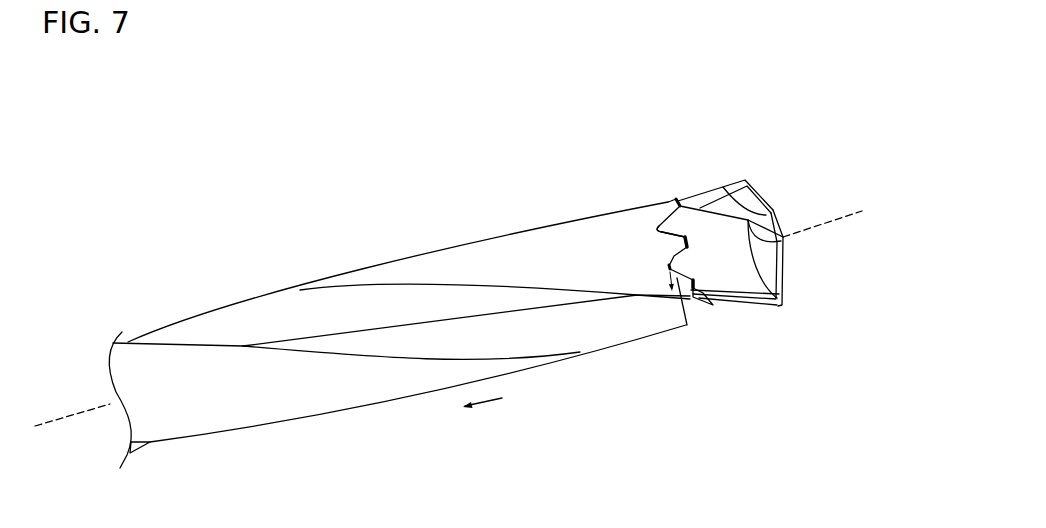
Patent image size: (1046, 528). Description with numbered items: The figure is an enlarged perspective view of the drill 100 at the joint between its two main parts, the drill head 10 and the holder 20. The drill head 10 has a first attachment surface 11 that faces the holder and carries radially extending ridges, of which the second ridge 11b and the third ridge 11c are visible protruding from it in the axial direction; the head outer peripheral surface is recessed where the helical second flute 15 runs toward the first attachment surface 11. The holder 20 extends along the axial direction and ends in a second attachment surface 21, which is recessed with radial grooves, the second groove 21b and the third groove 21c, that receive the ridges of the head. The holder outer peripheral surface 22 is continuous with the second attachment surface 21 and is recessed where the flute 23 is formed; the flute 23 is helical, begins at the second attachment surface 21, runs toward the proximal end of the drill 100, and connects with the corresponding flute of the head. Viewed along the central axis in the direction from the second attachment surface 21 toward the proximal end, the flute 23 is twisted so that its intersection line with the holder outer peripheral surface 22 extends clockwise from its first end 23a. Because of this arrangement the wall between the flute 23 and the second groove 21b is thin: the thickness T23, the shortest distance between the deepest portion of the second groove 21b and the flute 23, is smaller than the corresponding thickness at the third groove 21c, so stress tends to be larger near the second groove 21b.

The drill 100 is at (841, 100).
The drill head 10 is at (783, 200).
The first attachment surface 11 is at (700, 232).
The second ridge 11b is at (693, 266).
The third ridge 11c is at (675, 223).
The second flute 15 is at (755, 192).
The holder 20 is at (485, 232).
The second attachment surface 21 is at (673, 247).
The second groove 21b is at (670, 265).
The third groove 21c is at (663, 220).
The holder outer peripheral surface 22 is at (565, 238).
The flute 23 is at (548, 343).
The first end 23a is at (693, 300).
The thickness T23 is at (663, 286).